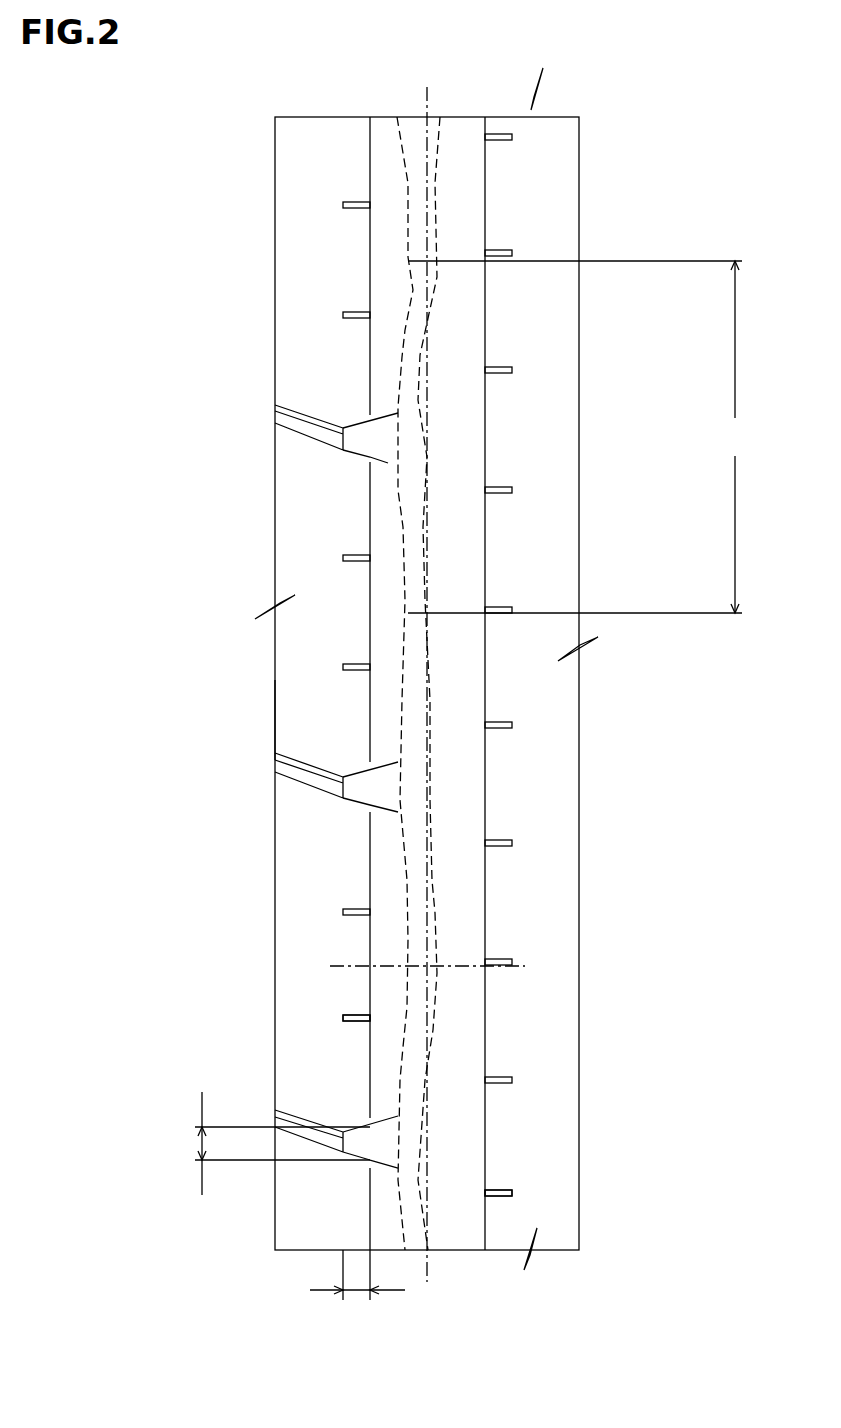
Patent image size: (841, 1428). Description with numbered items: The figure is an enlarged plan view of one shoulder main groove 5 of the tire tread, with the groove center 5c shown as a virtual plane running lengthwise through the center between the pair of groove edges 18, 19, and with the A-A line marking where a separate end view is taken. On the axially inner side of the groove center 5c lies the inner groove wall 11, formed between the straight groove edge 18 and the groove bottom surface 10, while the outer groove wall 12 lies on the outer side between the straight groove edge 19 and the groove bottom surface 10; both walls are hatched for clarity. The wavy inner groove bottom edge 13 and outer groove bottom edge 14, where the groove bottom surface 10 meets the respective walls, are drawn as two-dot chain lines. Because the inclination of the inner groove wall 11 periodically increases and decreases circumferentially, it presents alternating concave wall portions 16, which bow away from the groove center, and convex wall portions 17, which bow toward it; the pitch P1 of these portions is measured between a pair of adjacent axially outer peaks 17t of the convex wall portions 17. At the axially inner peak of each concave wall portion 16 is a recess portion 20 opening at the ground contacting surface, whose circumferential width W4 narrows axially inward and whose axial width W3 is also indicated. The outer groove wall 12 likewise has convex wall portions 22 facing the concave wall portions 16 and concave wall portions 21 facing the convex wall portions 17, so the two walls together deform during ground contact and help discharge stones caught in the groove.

The shoulder main groove 5 is at (413, 187).
The groove center 5c is at (427, 105).
The groove bottom surface 10 is at (407, 1065).
The inner groove wall 11 is at (150, 233).
The outer groove wall 12 is at (688, 673).
The inner groove bottom edge 13 is at (400, 730).
The outer groove bottom edge 14 is at (428, 350).
The concave wall portion 16 is at (383, 440).
The convex wall portion 17 is at (410, 252).
The axially outer peak 17t is at (408, 262).
The groove edge 18 is at (225, 1034).
The groove edge 19 is at (485, 1141).
The recess portion 20 is at (356, 437).
The concave wall portion 21 is at (410, 632).
The convex wall portion 22 is at (421, 437).
The pitch P1 is at (579, 437).
The width in the tire axial direction of the recess portion W3 is at (357, 1290).
The width in the tire circumferential direction of the recess portion W4 is at (261, 1143).
The A-A line A is at (427, 967).